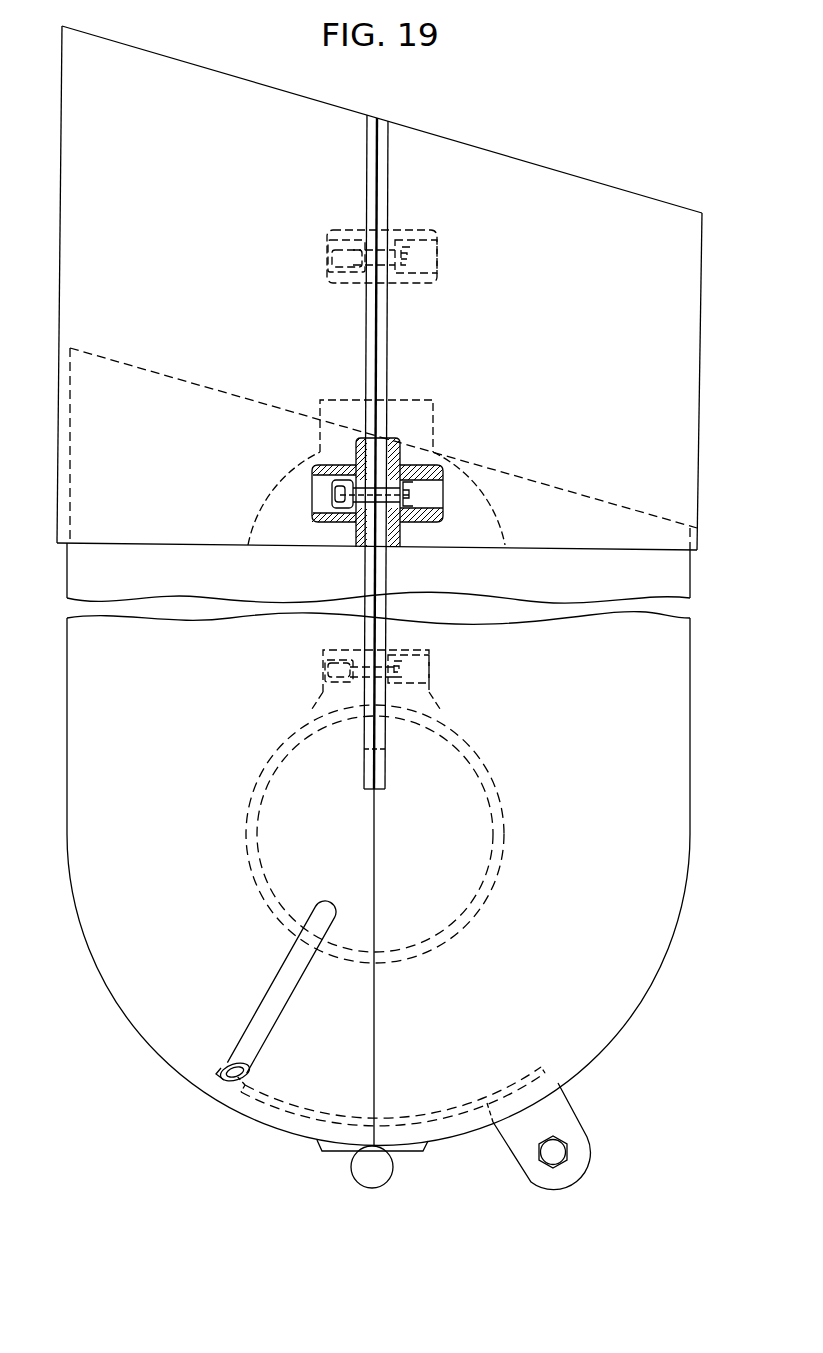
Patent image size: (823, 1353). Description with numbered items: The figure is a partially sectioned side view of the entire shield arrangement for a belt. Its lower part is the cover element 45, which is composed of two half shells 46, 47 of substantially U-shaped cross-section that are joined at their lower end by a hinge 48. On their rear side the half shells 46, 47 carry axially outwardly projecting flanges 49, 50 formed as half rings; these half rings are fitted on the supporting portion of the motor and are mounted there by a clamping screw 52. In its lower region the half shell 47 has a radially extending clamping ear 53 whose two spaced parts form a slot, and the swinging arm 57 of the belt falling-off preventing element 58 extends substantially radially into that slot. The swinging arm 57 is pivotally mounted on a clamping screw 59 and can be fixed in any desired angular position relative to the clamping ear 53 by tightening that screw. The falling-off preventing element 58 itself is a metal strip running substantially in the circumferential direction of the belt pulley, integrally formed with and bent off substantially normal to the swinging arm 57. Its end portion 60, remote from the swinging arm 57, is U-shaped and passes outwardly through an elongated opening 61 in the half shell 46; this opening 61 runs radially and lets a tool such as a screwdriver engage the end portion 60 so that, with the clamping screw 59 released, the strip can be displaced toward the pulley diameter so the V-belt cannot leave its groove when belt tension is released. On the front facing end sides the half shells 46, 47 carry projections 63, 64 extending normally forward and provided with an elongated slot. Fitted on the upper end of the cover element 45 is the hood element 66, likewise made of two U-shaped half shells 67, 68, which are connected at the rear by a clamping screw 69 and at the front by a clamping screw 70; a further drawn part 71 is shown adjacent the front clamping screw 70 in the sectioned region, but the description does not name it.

The cover element 45 is at (154, 1084).
The half shell 46 is at (126, 1004).
The half shell 47 is at (630, 989).
The hinge 48 is at (362, 1178).
The flange 49 is at (262, 781).
The flange 50 is at (499, 763).
The clamping screw 52 is at (432, 668).
The clamping ear 53 is at (568, 1100).
The swinging arm 57 is at (552, 1070).
The falling-off preventing element 58 is at (277, 1107).
The clamping screw 59 is at (548, 1153).
The end portion 60 is at (256, 1083).
The elongated opening 61 is at (270, 1012).
The projection 63 is at (366, 645).
The projection 64 is at (392, 641).
The hood element 66 is at (432, 120).
The half shell 67 is at (274, 109).
The half shell 68 is at (612, 203).
The clamping screw 69 is at (438, 249).
The clamping screw 70 is at (412, 488).
The hub flange 71 is at (272, 499).